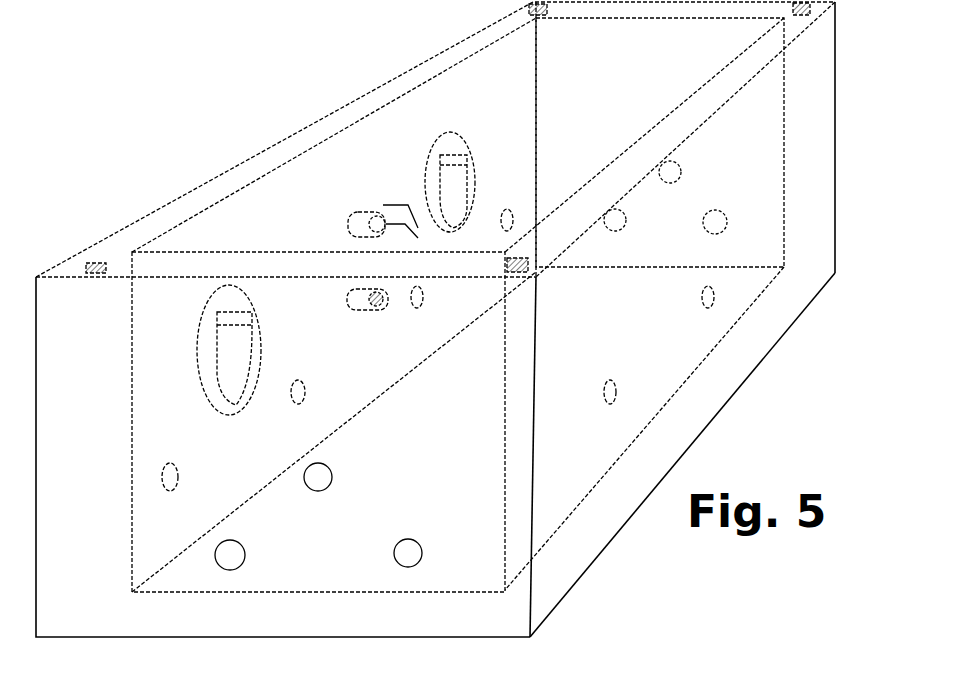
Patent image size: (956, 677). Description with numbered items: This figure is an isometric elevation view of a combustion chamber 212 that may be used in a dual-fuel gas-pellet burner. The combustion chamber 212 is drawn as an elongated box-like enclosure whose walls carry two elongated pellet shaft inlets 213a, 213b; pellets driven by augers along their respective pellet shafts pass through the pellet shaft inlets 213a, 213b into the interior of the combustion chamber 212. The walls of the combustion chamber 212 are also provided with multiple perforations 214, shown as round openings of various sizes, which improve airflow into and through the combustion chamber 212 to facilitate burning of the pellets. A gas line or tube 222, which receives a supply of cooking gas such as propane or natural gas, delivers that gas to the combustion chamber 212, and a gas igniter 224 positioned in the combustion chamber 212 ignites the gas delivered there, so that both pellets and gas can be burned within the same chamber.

The combustion chamber 212 is at (632, 99).
The pellet shaft inlet 213a is at (263, 350).
The pellet shaft inlet 213b is at (452, 146).
The perforations 214 is at (332, 477).
The gas line or tube 222 is at (366, 312).
The gas igniter 224 is at (367, 212).